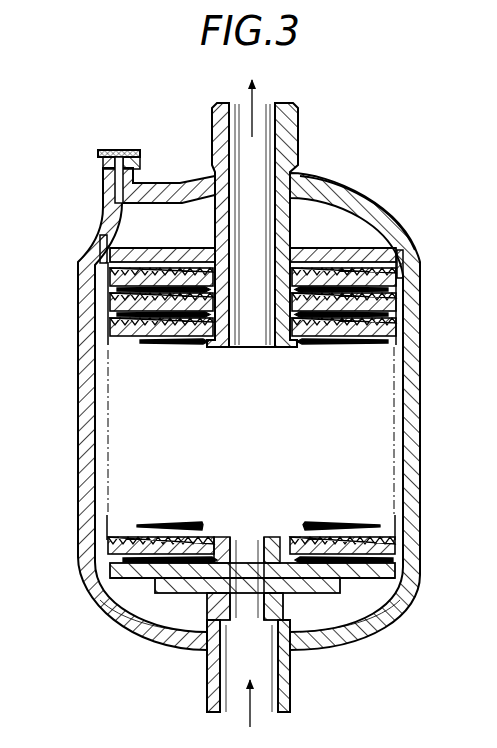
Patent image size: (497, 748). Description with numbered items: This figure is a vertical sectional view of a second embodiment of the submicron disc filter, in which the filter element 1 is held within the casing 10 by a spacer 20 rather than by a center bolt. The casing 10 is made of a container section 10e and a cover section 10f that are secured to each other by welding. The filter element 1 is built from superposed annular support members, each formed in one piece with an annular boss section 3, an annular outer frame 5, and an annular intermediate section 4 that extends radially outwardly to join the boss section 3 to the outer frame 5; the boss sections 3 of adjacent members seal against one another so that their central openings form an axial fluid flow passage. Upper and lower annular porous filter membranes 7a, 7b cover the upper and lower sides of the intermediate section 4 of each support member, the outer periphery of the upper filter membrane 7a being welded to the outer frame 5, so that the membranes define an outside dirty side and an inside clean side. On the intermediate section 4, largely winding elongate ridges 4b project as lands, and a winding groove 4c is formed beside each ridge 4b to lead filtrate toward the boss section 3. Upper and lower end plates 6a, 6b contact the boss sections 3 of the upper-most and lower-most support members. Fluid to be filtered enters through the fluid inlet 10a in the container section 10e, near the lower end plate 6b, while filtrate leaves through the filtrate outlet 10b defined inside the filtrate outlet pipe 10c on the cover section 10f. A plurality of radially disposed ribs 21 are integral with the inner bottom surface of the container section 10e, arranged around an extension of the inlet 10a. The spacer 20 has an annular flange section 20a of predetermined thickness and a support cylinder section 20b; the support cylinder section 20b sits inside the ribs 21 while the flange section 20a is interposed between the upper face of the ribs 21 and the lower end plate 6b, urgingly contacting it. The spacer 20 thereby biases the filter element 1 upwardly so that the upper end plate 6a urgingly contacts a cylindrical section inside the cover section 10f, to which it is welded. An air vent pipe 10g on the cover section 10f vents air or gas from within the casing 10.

The filter element 1 is at (400, 473).
The annular boss section 3 is at (295, 264).
The annular intermediate section 4 is at (110, 293).
The largely winding elongate ridge 4b is at (350, 252).
The winding groove 4c is at (140, 345).
The annular outer frame 5 is at (110, 302).
The upper end plate 6a is at (178, 248).
The lower end plate 6b is at (110, 568).
The upper annular porous filter membrane 7a is at (145, 249).
The lower annular porous filter membrane 7b is at (395, 312).
The casing 10 is at (78, 450).
The fluid inlet 10a is at (268, 713).
The filtrate outlet 10b is at (263, 112).
The filtrate outlet pipe 10c is at (284, 145).
The container section 10e is at (418, 438).
The cover section 10f is at (377, 211).
The air vent pipe 10g is at (103, 186).
The spacer 20 is at (197, 600).
The annular flange section 20a is at (323, 590).
The support cylinder section 20b is at (290, 694).
The ribs 21 is at (143, 605).